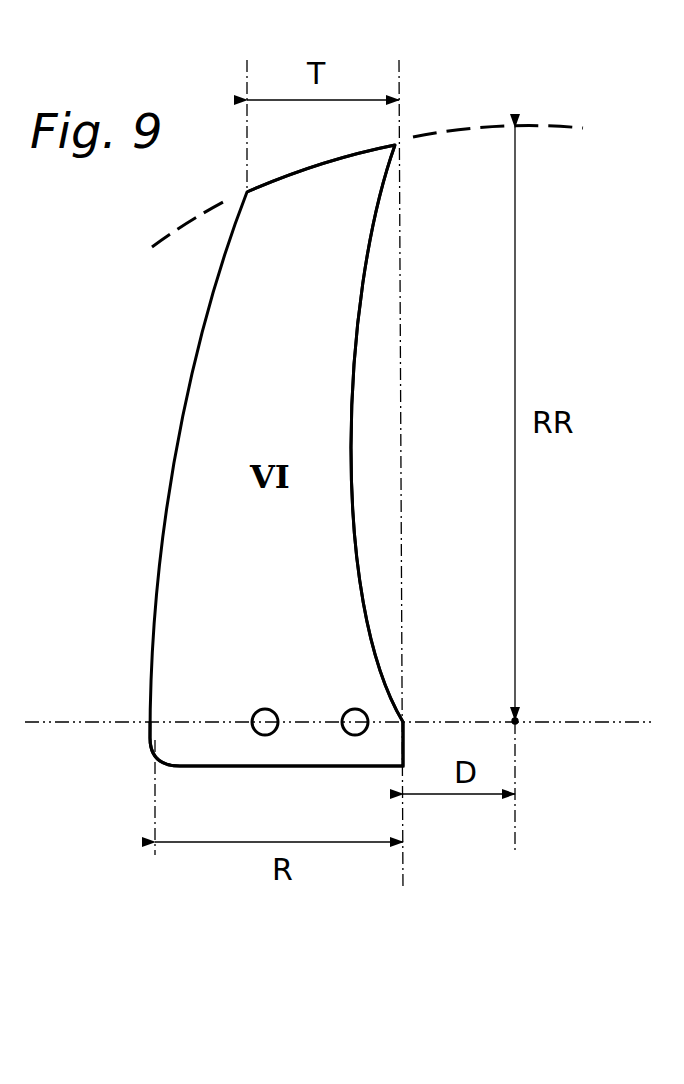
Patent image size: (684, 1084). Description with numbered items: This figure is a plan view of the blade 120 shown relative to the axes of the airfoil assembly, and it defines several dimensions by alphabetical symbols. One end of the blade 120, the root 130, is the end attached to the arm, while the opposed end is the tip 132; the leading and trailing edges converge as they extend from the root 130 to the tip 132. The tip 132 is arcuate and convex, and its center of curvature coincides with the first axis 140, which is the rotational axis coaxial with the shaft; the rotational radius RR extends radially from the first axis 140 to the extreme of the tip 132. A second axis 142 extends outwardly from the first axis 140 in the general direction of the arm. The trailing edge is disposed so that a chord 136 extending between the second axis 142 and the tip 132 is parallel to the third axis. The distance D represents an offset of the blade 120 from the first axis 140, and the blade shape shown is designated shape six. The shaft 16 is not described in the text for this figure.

The cutting unit 16 is at (326, 623).
The blade 120 is at (188, 548).
The root 130 is at (230, 745).
The tip 132 is at (337, 162).
The chord 136 is at (400, 331).
The first axis 140 is at (520, 722).
The second axis 142 is at (607, 717).